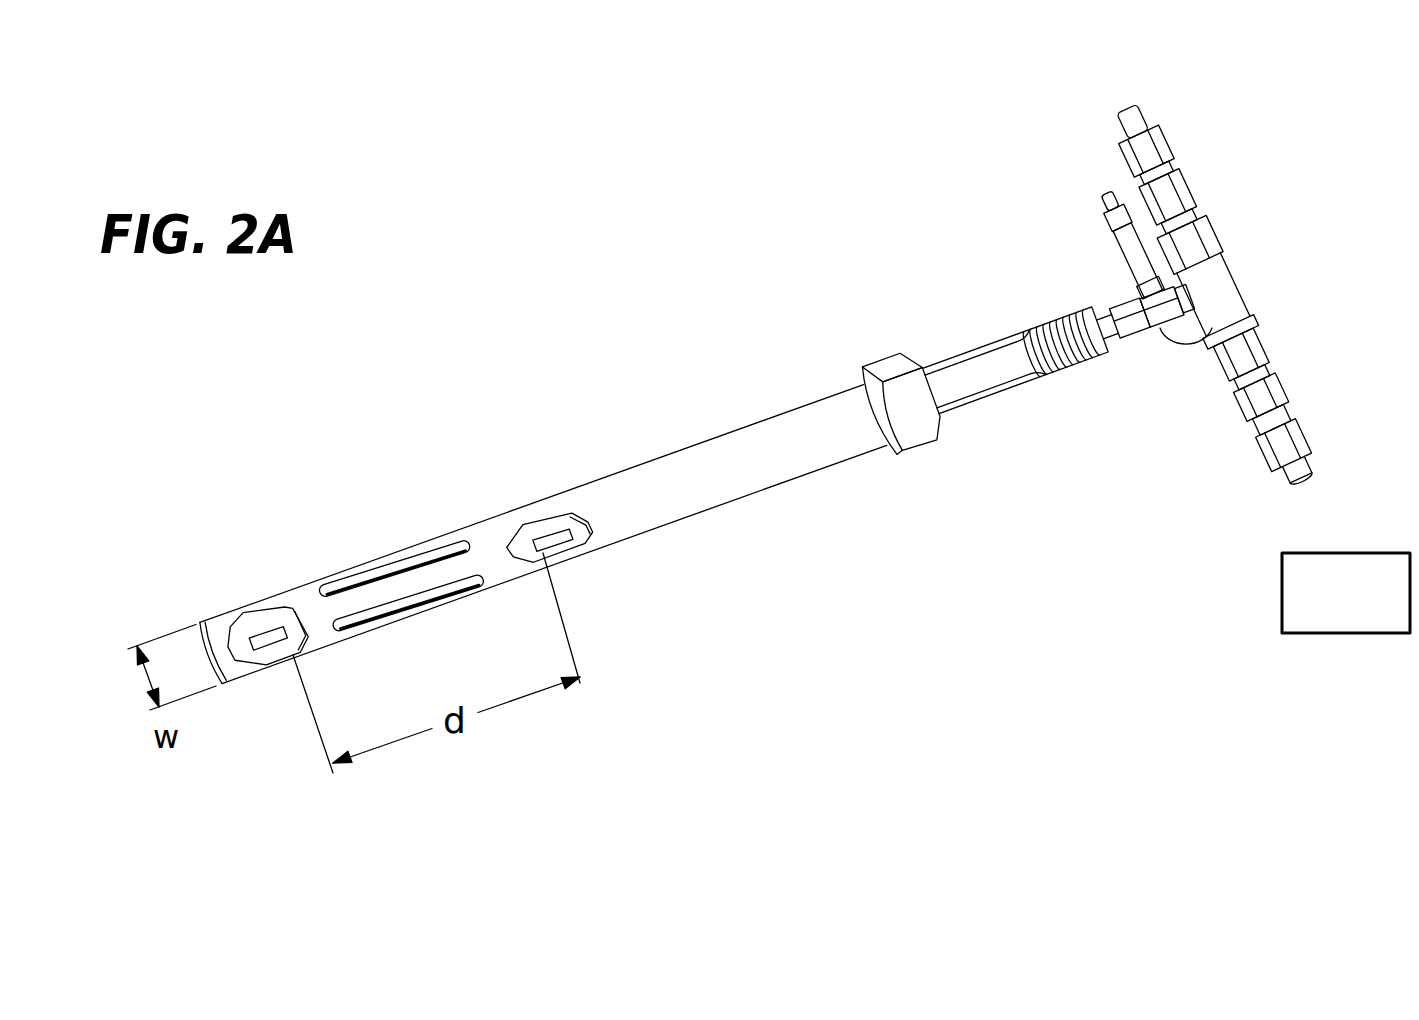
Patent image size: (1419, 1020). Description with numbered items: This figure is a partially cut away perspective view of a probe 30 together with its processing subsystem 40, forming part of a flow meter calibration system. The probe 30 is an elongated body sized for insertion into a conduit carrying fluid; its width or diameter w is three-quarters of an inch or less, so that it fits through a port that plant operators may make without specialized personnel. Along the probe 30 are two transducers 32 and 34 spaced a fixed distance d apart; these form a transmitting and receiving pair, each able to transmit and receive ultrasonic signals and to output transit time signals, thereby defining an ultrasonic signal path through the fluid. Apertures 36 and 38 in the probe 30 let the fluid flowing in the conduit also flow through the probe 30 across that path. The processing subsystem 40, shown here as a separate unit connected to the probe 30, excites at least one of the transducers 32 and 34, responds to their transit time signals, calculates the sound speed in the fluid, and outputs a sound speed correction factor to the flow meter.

The probe 30 is at (770, 437).
The transducer 32 is at (267, 642).
The transducer 34 is at (562, 548).
The aperture 36 is at (347, 573).
The aperture 38 is at (350, 640).
The processing subsystem 40 is at (1302, 480).